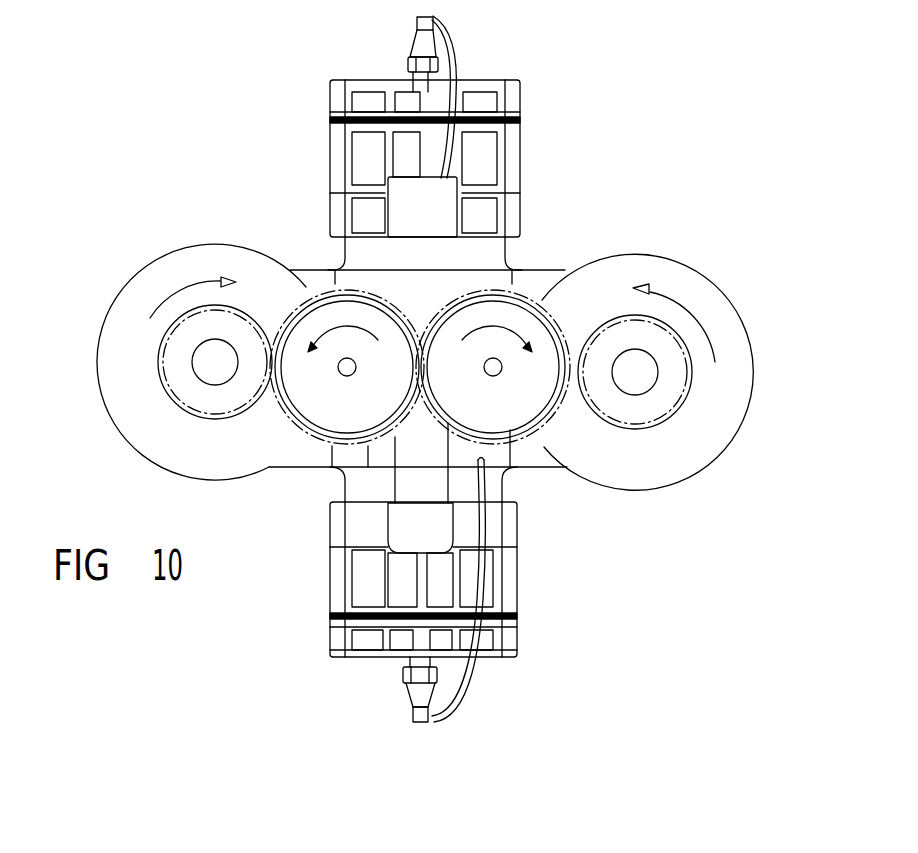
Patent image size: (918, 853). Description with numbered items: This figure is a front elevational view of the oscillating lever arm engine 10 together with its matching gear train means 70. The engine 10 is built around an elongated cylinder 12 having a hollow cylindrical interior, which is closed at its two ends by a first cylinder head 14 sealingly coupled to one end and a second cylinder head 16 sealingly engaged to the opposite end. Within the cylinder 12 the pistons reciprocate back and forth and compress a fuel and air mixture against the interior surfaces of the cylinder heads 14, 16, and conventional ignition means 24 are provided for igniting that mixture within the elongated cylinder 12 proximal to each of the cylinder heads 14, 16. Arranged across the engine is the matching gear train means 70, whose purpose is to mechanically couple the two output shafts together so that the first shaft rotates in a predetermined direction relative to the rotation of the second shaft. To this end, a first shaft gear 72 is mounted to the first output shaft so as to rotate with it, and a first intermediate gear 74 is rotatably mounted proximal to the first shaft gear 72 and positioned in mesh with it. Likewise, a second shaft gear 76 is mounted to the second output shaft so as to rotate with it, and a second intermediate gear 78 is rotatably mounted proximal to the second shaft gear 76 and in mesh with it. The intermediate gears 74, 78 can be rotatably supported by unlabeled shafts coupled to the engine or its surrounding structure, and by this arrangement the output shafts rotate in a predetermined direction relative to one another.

The oscillating lever arm engine 10 is at (148, 166).
The elongated cylinder 12 is at (460, 255).
The first cylinder head 14 is at (520, 103).
The second cylinder head 16 is at (515, 643).
The ignition means 24 is at (460, 61).
The matching gear train means 70 is at (582, 305).
The first shaft gear 72 is at (648, 407).
The first intermediate gear 74 is at (514, 424).
The second shaft gear 76 is at (175, 382).
The second intermediate gear 78 is at (322, 412).